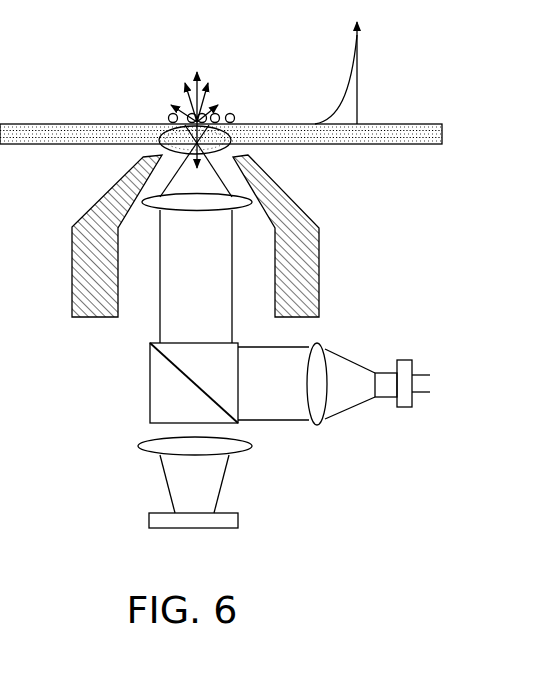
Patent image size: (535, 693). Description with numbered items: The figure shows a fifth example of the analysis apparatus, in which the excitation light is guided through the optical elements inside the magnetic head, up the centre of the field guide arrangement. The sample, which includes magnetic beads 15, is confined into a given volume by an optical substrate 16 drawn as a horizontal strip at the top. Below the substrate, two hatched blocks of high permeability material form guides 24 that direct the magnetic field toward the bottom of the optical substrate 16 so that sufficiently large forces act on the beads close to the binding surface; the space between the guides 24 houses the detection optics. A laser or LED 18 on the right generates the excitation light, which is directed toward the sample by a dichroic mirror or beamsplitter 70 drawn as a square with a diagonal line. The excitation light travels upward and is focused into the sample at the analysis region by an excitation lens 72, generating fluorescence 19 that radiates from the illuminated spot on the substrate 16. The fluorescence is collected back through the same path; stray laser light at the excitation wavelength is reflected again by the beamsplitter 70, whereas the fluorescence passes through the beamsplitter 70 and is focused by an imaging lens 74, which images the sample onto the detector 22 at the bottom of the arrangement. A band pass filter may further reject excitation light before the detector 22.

The magnetic beads 15 is at (170, 117).
The substrate 16 is at (442, 135).
The laser 18 is at (405, 408).
The fluorescence 19 is at (190, 72).
The detector 22 is at (239, 521).
The guides 24 is at (74, 288).
The dichroic mirror or beamsplitter 70 is at (150, 403).
The excitation lens 72 is at (240, 148).
The imaging lens 74 is at (198, 212).